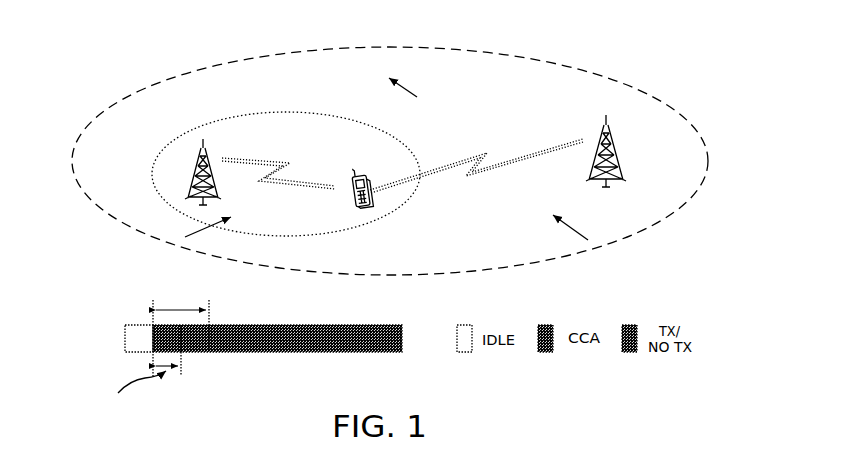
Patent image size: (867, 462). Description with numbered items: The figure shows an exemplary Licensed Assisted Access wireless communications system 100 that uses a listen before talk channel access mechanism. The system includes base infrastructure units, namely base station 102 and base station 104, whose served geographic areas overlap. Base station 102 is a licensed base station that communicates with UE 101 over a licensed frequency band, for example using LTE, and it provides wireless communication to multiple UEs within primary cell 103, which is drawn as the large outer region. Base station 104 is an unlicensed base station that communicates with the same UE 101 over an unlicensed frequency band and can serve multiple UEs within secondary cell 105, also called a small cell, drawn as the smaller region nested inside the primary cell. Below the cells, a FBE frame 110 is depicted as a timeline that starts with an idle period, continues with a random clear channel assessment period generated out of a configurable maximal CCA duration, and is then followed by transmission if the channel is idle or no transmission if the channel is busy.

The wireless communications system 100 is at (126, 37).
The UE 101 is at (356, 175).
The base station 102 is at (606, 117).
The primary cell 103 is at (648, 101).
The base station 104 is at (204, 141).
The secondary cell 105 is at (356, 121).
The FBE frame 110 is at (297, 325).